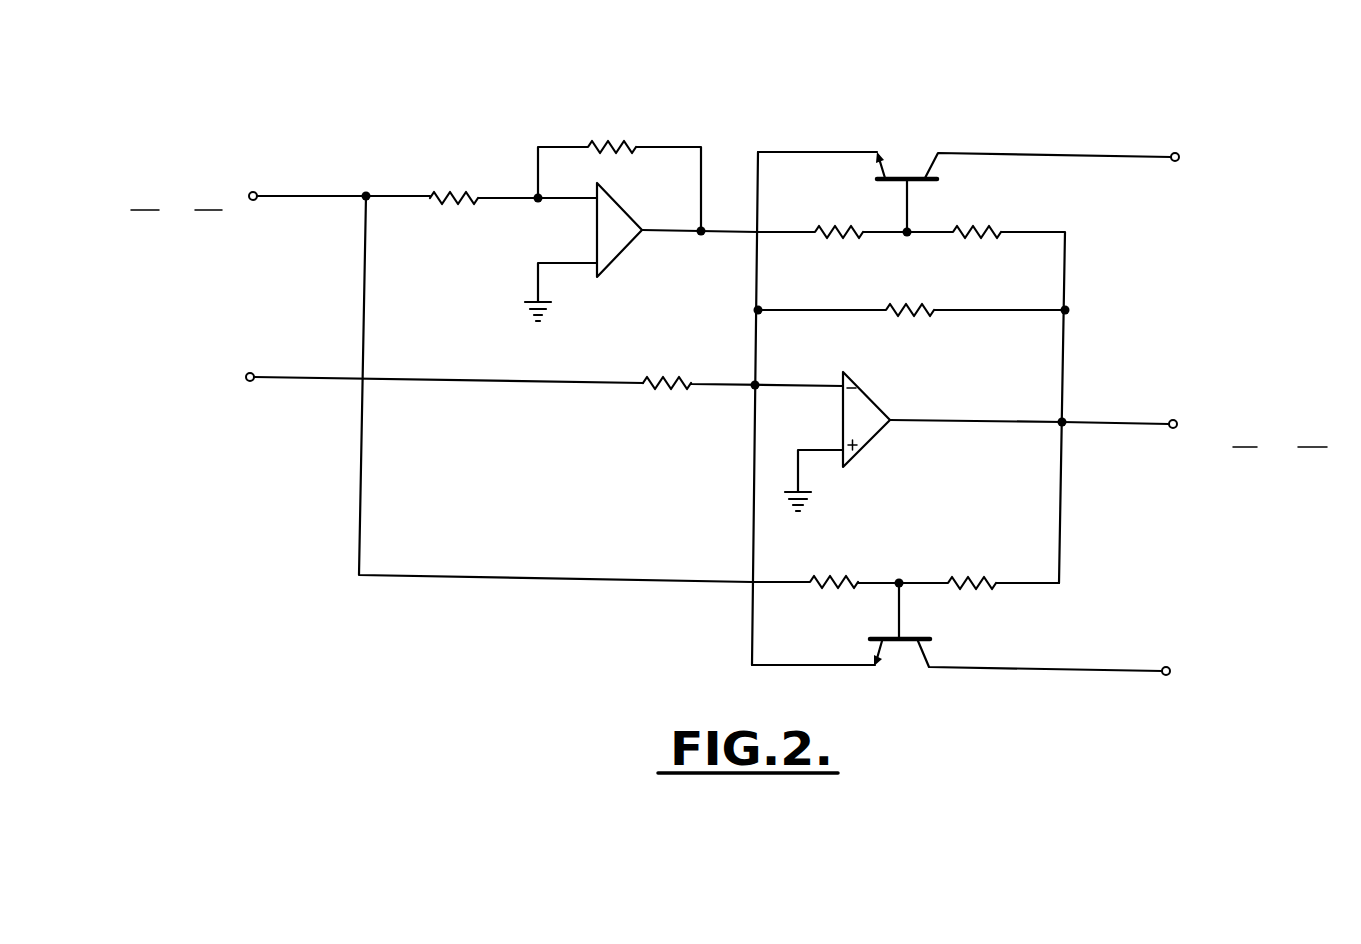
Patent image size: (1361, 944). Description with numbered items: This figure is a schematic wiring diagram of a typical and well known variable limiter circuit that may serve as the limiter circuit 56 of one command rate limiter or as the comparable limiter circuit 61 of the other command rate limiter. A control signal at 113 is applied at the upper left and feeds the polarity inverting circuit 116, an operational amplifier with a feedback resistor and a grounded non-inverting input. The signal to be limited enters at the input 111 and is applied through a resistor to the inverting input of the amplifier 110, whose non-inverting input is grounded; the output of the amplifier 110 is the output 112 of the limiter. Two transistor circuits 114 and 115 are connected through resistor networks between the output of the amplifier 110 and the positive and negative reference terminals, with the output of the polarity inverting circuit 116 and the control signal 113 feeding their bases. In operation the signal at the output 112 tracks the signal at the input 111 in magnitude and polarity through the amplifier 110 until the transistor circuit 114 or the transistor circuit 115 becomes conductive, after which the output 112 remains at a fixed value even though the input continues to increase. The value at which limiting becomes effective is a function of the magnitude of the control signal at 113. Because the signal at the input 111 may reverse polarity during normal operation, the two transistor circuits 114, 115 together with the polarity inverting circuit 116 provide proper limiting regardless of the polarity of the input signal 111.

The limiter circuit 56 is at (485, 42).
The limiter circuit 61 is at (704, 416).
The amplifier 110 is at (881, 405).
The input 111 is at (285, 378).
The output 112 is at (1107, 421).
The control signal 113 is at (307, 193).
The transistor circuit 114 is at (1012, 203).
The transistor circuit 115 is at (1004, 633).
The polarity inverting circuit 116 is at (680, 273).